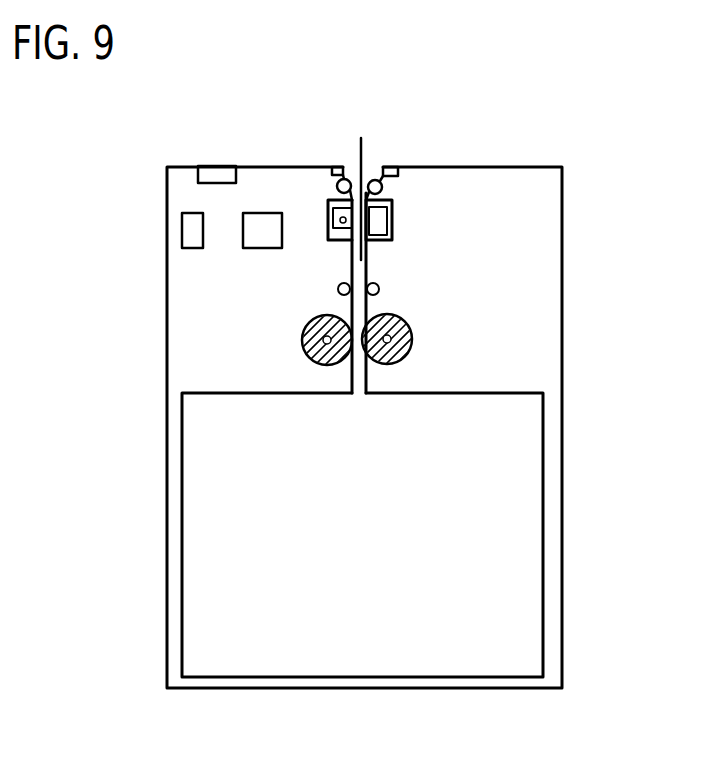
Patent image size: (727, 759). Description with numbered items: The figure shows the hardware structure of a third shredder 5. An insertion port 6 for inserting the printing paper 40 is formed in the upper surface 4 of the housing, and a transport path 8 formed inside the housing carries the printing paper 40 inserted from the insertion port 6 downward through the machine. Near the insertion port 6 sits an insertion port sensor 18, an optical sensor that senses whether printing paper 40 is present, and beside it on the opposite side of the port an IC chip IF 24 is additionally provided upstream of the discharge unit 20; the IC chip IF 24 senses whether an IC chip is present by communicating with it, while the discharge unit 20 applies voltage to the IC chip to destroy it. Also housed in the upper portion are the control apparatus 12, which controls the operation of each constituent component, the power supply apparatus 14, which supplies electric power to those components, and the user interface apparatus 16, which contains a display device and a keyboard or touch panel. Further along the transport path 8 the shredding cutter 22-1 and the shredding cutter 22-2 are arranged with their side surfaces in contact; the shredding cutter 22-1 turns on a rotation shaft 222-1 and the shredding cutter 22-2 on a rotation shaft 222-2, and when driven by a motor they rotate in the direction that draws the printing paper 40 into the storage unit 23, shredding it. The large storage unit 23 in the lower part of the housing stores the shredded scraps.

The upper surface 4 is at (562, 193).
The third shredder 5 is at (364, 736).
The insertion port 6 is at (351, 158).
The printing paper 40 is at (367, 163).
The transport path 8 is at (338, 266).
The control apparatus 12 is at (182, 222).
The power supply apparatus 14 is at (247, 248).
The user interface apparatus 16 is at (215, 166).
The insertion port sensor 18 is at (333, 167).
The discharge unit 20 is at (406, 222).
The shredding cutter 22-1 is at (410, 322).
The shredding cutter 22-2 is at (305, 322).
The rotation shaft 222-1 is at (412, 347).
The rotation shaft 222-2 is at (323, 340).
The storage unit 23 is at (180, 602).
The IC chip IF 24 is at (396, 167).